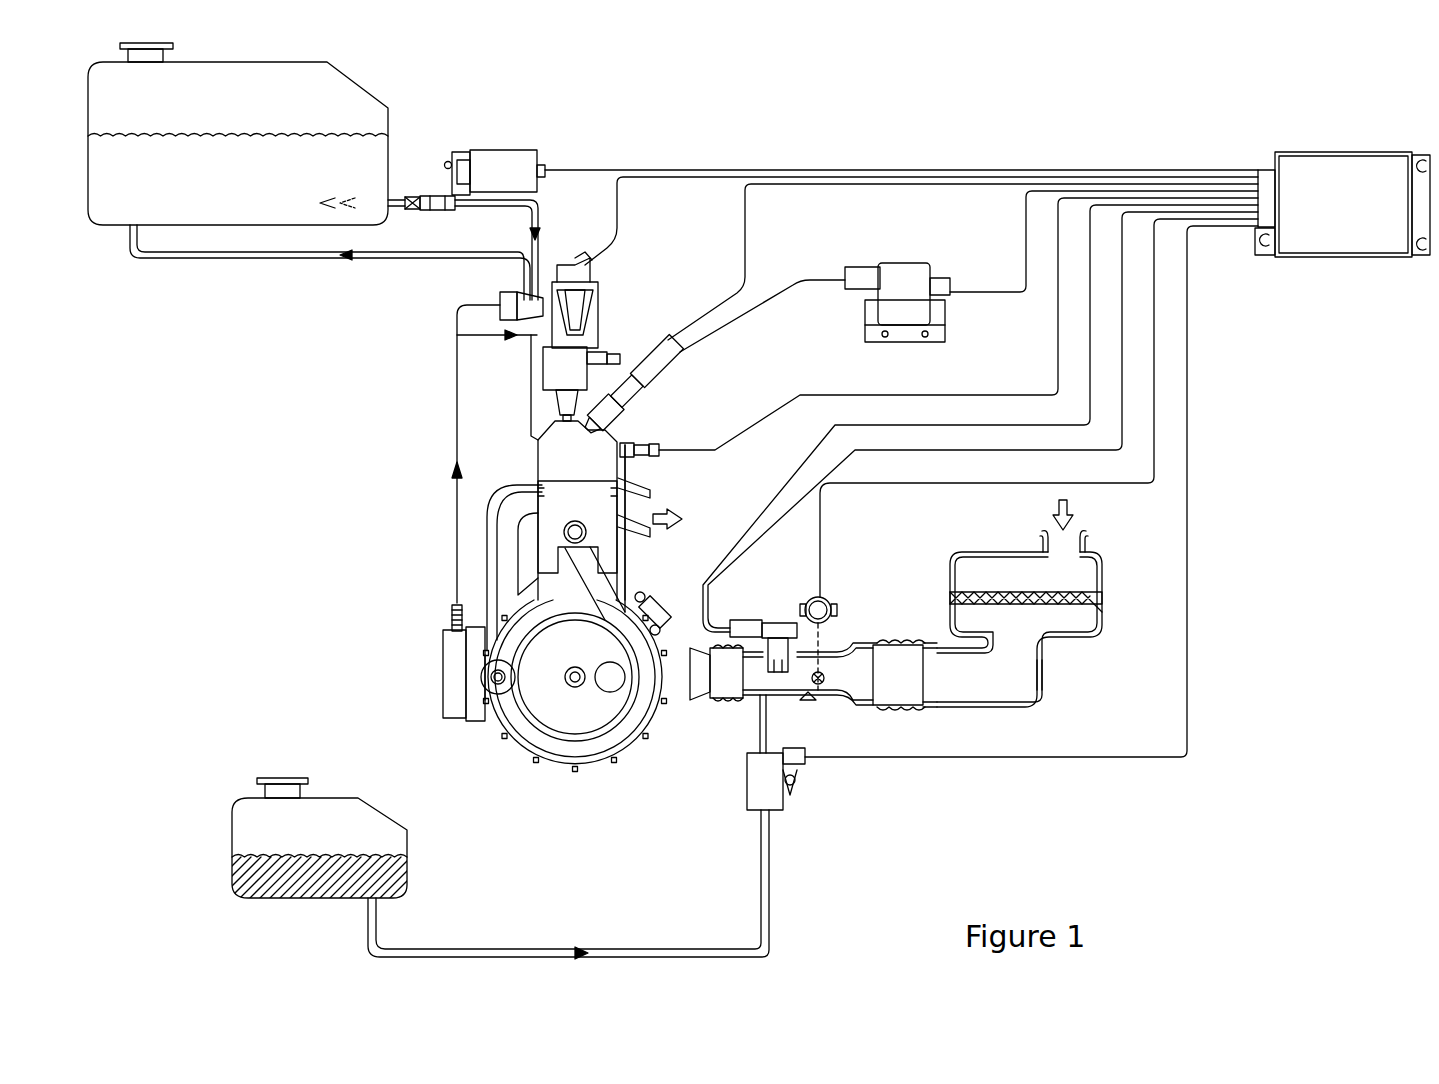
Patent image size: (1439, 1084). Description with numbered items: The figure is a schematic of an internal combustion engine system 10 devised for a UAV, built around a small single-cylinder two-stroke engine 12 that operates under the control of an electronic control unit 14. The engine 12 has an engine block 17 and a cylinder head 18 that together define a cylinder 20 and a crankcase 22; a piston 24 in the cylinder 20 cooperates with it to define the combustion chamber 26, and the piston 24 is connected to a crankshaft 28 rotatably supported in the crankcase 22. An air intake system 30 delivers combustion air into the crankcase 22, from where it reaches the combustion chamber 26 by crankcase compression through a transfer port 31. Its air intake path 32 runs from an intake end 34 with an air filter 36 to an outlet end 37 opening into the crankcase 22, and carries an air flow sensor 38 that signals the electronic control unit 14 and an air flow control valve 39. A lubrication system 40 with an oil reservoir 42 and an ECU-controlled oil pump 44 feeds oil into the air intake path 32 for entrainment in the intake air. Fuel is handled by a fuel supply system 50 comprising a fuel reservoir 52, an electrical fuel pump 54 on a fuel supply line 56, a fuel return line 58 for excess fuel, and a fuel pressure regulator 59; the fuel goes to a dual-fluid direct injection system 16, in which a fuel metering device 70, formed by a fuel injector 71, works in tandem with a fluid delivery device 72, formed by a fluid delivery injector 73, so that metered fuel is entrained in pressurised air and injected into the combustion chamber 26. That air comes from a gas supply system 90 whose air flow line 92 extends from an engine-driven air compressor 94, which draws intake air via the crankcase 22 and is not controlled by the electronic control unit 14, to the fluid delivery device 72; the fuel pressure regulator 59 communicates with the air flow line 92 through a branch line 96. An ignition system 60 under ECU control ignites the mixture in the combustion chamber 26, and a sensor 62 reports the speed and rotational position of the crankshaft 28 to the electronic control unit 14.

The internal combustion engine system 10 is at (250, 600).
The engine 12 is at (612, 772).
The electronic control unit 14 is at (1343, 228).
The dual-fluid direct injection system 16 is at (597, 262).
The engine block 17 is at (622, 560).
The cylinder head 18 is at (645, 425).
The cylinder 20 is at (568, 455).
The crankcase 22 is at (480, 720).
The piston 24 is at (507, 500).
The combustion chamber 26 is at (625, 457).
The crankshaft 28 is at (573, 682).
The air intake system 30 is at (1042, 682).
The transfer port 31 is at (502, 570).
The air intake path 32 is at (860, 665).
The intake end 34 is at (1078, 548).
The air filter 36 is at (1102, 625).
The outlet end 37 is at (696, 700).
The air flow sensor 38 is at (777, 623).
The air flow control valve 39 is at (810, 700).
The lubrication system 40 is at (767, 912).
The oil reservoir 42 is at (252, 828).
The oil pump 44 is at (790, 783).
The fuel supply system 50 is at (420, 182).
The fuel reservoir 52 is at (178, 197).
The electrical fuel pump 54 is at (510, 160).
The fuel supply line 56 is at (530, 215).
The fuel return line 58 is at (290, 262).
The fuel pressure regulator 59 is at (500, 302).
The ignition system 60 is at (690, 372).
The sensor 62 is at (668, 608).
The fuel metering device 70 is at (598, 300).
The fuel injector 71 is at (590, 332).
The fluid delivery device 72 is at (557, 382).
The fluid delivery injector 73 is at (560, 408).
The gas supply system 90 is at (455, 527).
The air flow line 92 is at (456, 498).
The air compressor 94 is at (443, 655).
The branch line 96 is at (457, 322).